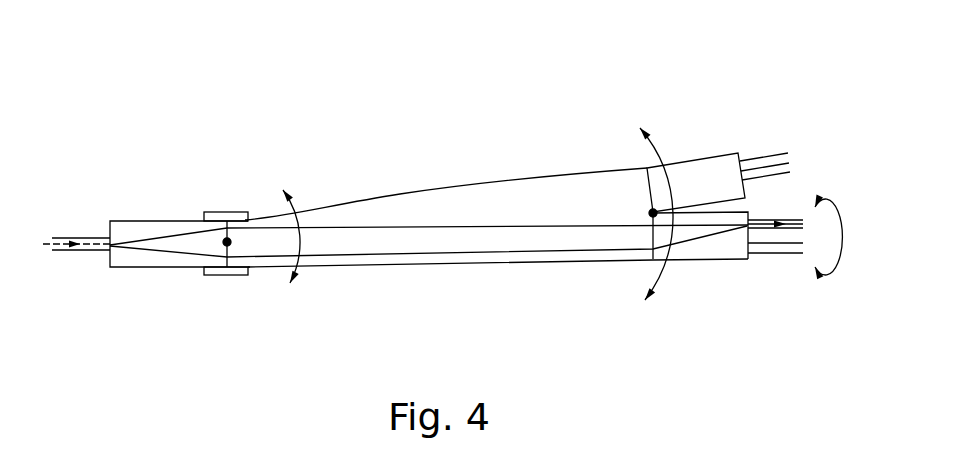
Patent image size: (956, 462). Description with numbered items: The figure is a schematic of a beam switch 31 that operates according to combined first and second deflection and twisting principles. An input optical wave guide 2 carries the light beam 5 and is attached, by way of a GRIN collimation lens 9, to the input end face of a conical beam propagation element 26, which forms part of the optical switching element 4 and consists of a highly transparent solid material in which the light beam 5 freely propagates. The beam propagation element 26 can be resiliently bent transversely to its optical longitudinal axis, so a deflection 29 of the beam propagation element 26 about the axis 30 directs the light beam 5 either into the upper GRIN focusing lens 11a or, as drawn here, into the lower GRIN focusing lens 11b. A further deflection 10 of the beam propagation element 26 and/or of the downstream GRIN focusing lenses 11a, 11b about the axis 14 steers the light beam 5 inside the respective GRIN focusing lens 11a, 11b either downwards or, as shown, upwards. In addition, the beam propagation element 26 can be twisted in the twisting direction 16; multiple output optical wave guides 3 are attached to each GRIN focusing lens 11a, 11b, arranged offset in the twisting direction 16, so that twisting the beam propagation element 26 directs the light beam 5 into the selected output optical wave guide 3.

The input optical wave guide 2 is at (80, 237).
The output optical wave guides 3 is at (797, 214).
The optical switching element 4 is at (415, 136).
The light beam 5 is at (97, 252).
The GRIN collimation lens 9 is at (145, 261).
The deflection 10 is at (655, 152).
The upper GRIN focusing lens 11a is at (717, 168).
The lower GRIN focusing lens 11b is at (718, 262).
The axis 14 is at (650, 214).
The twisting direction 16 is at (819, 200).
The beam propagation element 26 is at (505, 264).
The deflection direction 29 is at (296, 212).
The axis 30 is at (222, 243).
The beam switch 31 is at (107, 79).